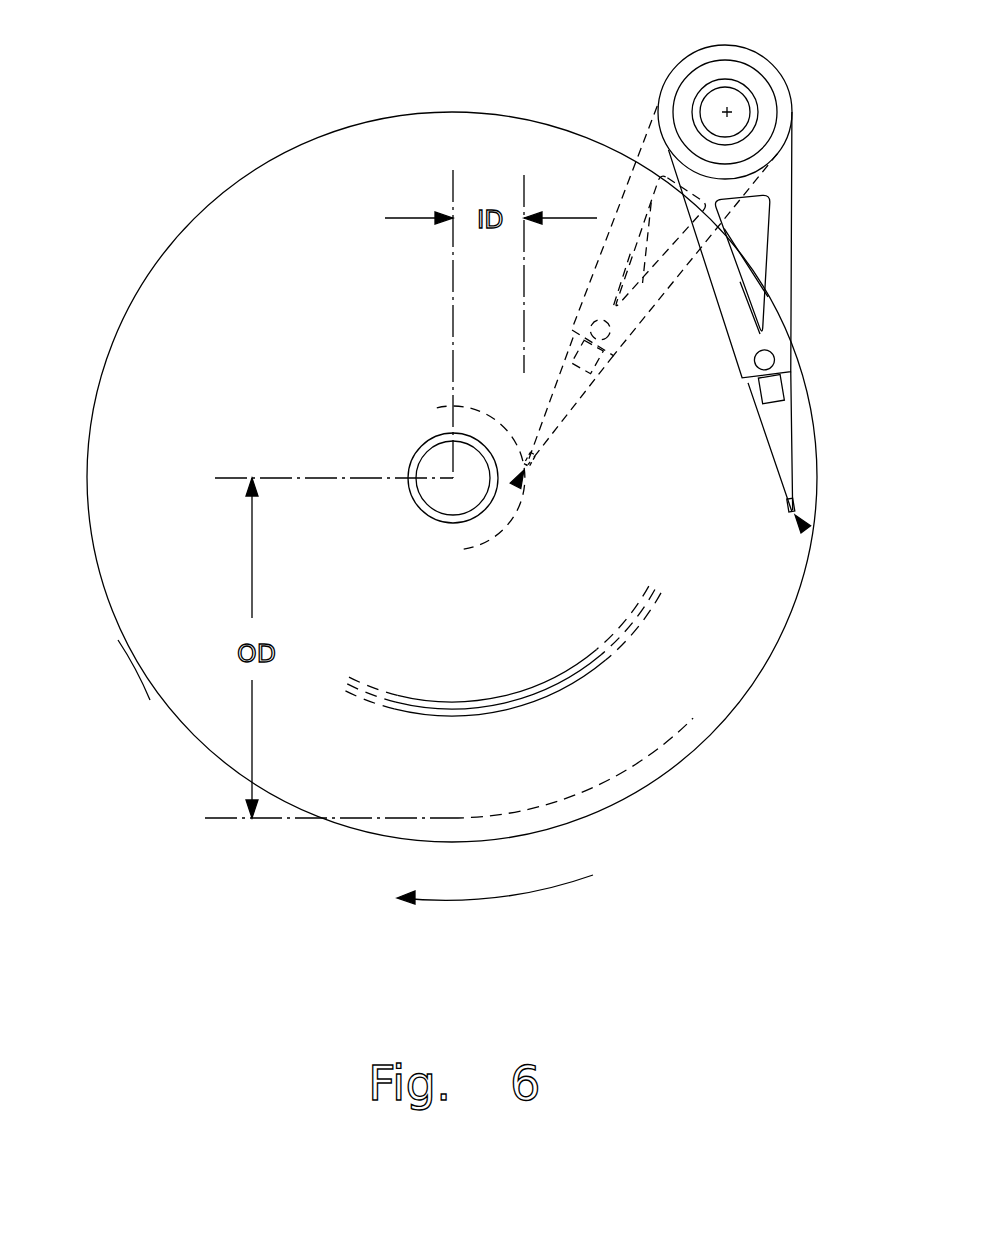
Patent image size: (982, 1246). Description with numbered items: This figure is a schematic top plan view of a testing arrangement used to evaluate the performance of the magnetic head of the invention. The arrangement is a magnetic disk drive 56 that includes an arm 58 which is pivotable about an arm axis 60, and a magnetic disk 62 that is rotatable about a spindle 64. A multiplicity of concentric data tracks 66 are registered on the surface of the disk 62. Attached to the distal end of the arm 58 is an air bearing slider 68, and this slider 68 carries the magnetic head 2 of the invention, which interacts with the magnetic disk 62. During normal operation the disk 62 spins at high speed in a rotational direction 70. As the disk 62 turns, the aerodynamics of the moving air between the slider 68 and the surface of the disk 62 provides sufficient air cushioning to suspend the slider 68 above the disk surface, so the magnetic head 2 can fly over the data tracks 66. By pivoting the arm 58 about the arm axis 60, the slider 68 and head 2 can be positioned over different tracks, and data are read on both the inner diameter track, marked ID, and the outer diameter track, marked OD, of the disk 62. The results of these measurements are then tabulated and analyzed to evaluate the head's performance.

The magnetic head 2 is at (806, 529).
The magnetic disk drive 56 is at (127, 168).
The arm 58 is at (790, 233).
The arm axis 60 is at (728, 110).
The magnetic disk 62 is at (135, 665).
The spindle 64 is at (432, 449).
The concentric data tracks 66 is at (517, 693).
The air bearing slider 68 is at (790, 510).
The rotational direction 70 is at (517, 895).